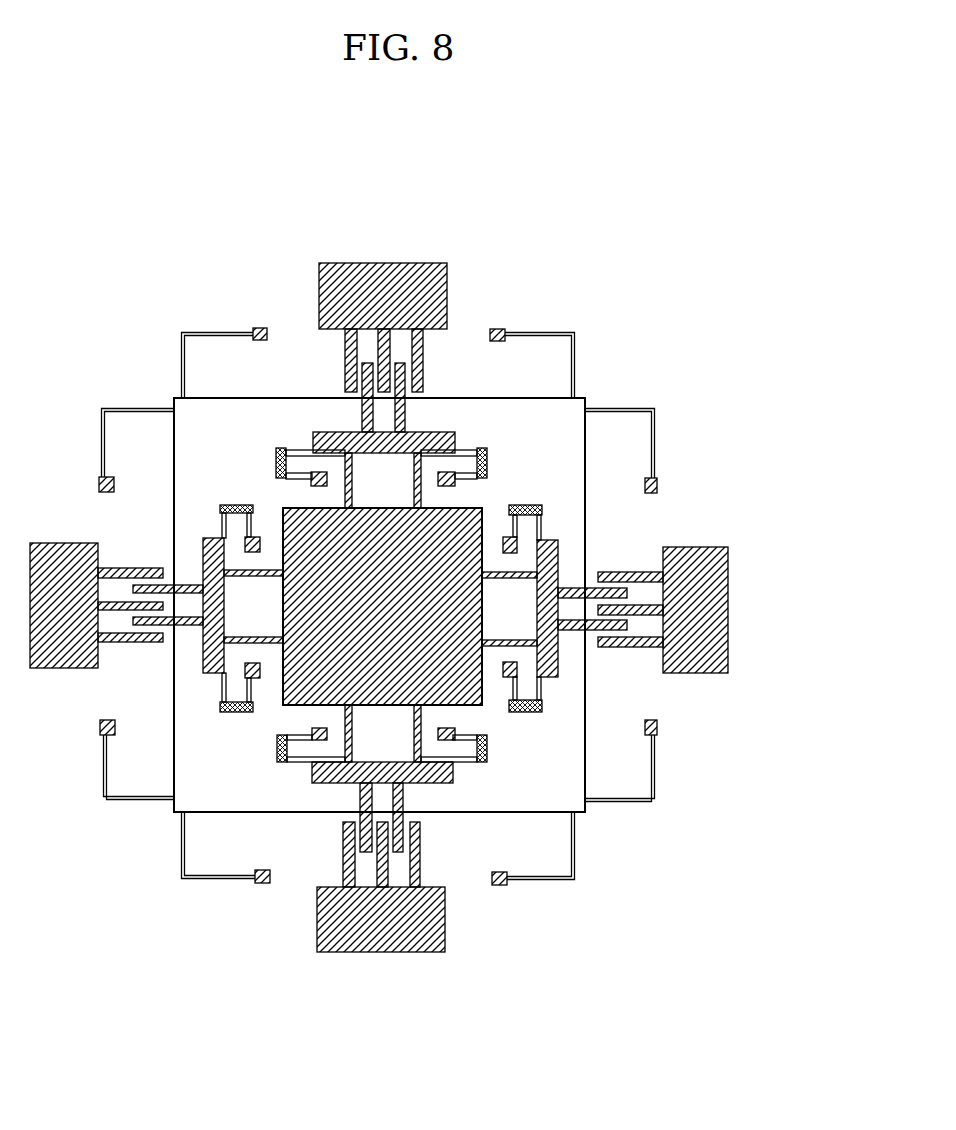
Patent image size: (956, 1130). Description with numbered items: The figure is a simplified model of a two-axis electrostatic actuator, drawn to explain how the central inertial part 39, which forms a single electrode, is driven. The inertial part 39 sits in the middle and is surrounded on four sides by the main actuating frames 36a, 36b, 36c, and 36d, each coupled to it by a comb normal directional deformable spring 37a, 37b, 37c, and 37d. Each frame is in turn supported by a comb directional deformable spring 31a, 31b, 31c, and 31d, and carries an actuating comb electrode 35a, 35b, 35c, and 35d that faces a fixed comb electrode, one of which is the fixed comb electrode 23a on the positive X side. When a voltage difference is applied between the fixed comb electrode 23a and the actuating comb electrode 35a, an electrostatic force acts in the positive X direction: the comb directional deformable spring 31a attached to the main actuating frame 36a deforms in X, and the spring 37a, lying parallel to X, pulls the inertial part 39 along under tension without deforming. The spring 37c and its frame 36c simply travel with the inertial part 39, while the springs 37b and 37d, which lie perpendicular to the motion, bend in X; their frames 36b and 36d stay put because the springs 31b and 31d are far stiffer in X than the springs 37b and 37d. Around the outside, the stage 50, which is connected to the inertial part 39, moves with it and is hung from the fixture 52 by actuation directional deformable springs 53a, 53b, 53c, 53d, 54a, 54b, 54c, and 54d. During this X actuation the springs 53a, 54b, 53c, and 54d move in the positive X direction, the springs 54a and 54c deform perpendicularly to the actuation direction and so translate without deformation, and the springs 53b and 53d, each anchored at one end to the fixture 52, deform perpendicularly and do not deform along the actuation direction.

The stage 50 is at (531, 432).
The inertial part 39 is at (481, 508).
The comb normal directional deformable spring 37a is at (507, 579).
The comb normal directional deformable spring 37b is at (345, 722).
The comb normal directional deformable spring 37c is at (253, 579).
The comb normal directional deformable spring 37d is at (345, 488).
The main actuating frame 36a is at (558, 545).
The main actuating frame 36b is at (312, 772).
The main actuating frame 36c is at (203, 540).
The main actuating frame 36d is at (313, 438).
The actuating comb electrode 35a is at (583, 578).
The actuating comb electrode 35b is at (381, 817).
The actuating comb electrode 35c is at (153, 589).
The actuating comb electrode 35d is at (362, 410).
The comb directional deformable spring 31a is at (541, 518).
The comb directional deformable spring 31b is at (466, 762).
The comb directional deformable spring 31c is at (222, 508).
The comb directional deformable spring 31d is at (467, 449).
The fixed comb electrode 23a is at (630, 648).
The fixture 52 is at (500, 329).
The actuation directional deformable spring 53a is at (655, 445).
The actuation directional deformable spring 53b is at (541, 879).
The actuation directional deformable spring 53c is at (104, 760).
The actuation directional deformable spring 53d is at (556, 332).
The actuation directional deformable spring 54a is at (613, 410).
The actuation directional deformable spring 54b is at (574, 850).
The actuation directional deformable spring 54c is at (143, 799).
The actuation directional deformable spring 54d is at (574, 352).